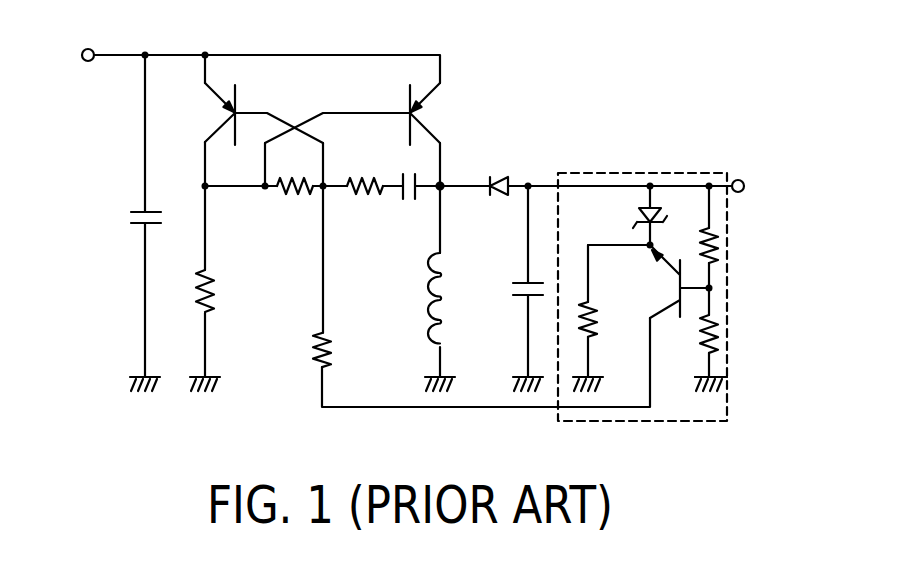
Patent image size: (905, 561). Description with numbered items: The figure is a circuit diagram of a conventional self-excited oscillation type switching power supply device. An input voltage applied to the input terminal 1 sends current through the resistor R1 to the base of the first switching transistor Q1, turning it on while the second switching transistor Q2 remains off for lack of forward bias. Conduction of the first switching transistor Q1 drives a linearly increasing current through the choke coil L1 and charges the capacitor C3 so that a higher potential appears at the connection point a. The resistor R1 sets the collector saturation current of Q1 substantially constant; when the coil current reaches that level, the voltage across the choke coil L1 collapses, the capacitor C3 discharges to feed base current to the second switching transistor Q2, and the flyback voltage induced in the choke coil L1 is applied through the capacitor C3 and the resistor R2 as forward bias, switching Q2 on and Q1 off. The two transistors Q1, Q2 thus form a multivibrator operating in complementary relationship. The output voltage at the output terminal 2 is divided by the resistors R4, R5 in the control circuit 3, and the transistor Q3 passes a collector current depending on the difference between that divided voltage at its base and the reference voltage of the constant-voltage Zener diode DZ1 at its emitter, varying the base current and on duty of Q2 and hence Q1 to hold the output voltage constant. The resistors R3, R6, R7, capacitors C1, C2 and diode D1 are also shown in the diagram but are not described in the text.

The input terminal 1 is at (84, 47).
The output terminal 2 is at (742, 179).
The control circuit 3 is at (727, 377).
The connection point a is at (445, 182).
The first switching transistor Q1 is at (370, 113).
The second switching transistor Q2 is at (243, 114).
The transistor Q3 is at (658, 281).
The resistor R1 is at (221, 307).
The resistor R2 is at (362, 210).
The resistor R3 is at (295, 210).
The resistor R4 is at (695, 232).
The resistor R5 is at (691, 341).
The resistor R6 is at (614, 307).
The resistor R7 is at (340, 365).
The capacitor C1 is at (134, 239).
The capacitor C2 is at (516, 311).
The capacitor C3 is at (409, 207).
The choke coil L1 is at (416, 298).
The diode D1 is at (497, 208).
The constant-voltage Zener diode DZ1 is at (616, 221).